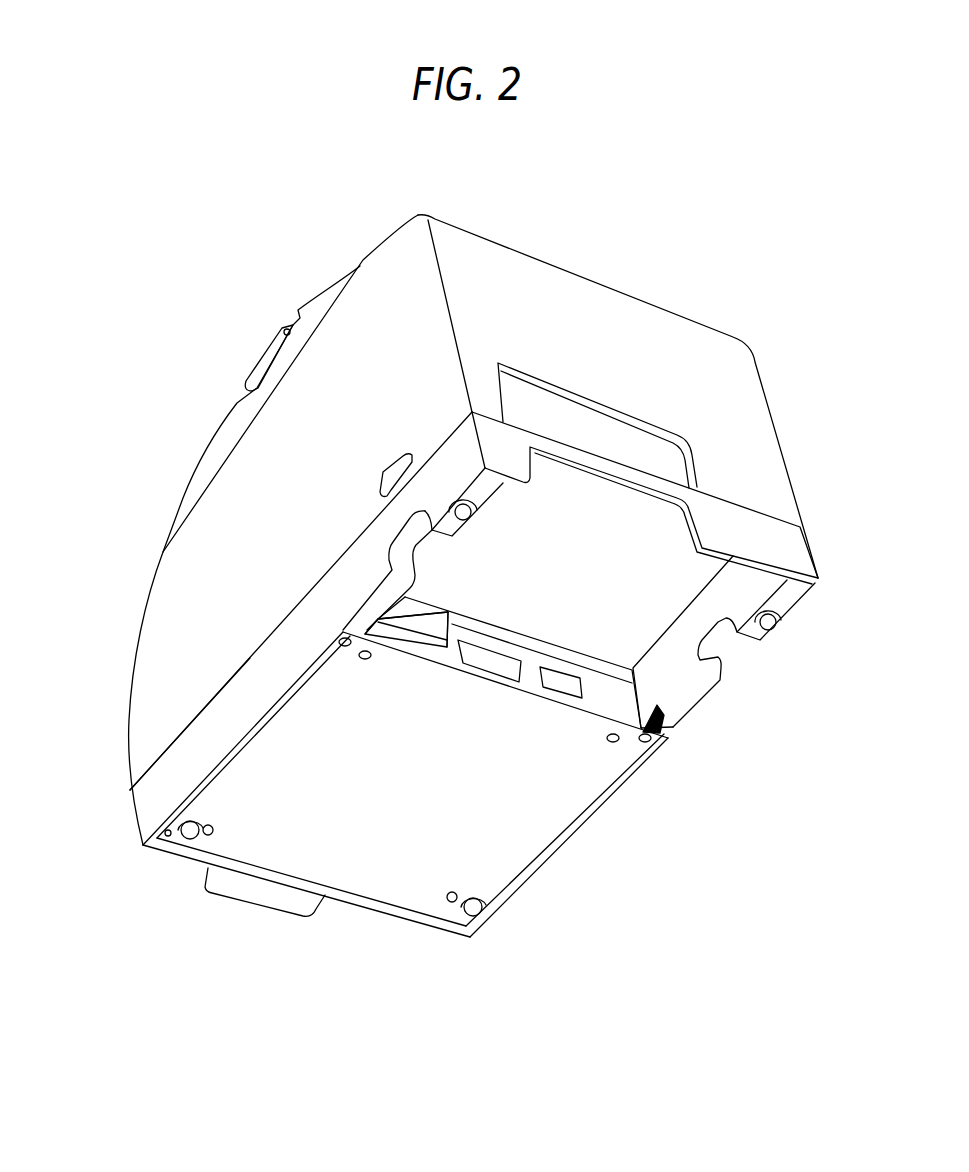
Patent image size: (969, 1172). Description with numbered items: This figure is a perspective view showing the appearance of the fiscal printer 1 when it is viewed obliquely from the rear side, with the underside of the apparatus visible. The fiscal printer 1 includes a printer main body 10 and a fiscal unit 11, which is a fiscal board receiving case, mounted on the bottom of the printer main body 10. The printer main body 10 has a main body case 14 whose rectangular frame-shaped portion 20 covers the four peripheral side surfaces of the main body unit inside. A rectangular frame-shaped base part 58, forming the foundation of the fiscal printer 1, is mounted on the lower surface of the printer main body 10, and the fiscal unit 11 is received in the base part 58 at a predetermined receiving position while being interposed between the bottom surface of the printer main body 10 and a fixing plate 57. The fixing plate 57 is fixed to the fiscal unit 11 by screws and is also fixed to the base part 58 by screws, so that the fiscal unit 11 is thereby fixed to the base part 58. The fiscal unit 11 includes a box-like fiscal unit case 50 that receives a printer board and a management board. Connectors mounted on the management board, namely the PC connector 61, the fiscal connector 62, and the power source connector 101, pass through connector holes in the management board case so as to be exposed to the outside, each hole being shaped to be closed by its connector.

The fiscal printer 1 is at (739, 283).
The printer main body 10 is at (786, 409).
The fiscal unit 11 is at (490, 852).
The main body case 14 is at (264, 337).
The rectangular frame-shaped portion 20 is at (162, 625).
The fiscal unit case 50 is at (642, 704).
The fixing plate 57 is at (517, 810).
The base part 58 is at (157, 792).
The PC connector 61 is at (487, 662).
The fiscal connector 62 is at (402, 650).
The power source connector 101 is at (560, 692).